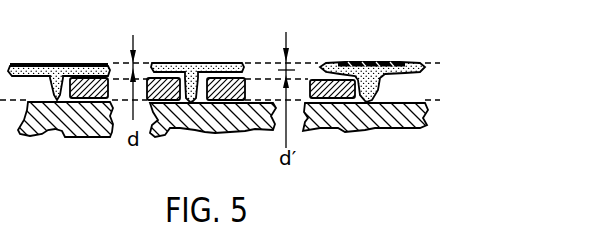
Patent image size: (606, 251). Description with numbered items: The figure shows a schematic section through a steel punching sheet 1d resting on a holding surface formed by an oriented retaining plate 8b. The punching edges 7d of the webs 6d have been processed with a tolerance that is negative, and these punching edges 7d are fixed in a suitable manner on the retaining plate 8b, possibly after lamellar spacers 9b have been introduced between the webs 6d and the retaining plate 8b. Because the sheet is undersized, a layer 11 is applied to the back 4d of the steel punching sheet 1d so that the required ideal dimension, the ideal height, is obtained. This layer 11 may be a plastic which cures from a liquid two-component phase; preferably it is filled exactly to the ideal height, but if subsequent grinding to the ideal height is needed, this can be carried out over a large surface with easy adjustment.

The layer 11 is at (67, 63).
The steel punching sheet 1d is at (268, 60).
The back of the steel punching sheet 4d is at (193, 58).
The web 6d is at (362, 104).
The punching edge 7d is at (364, 108).
The retaining plate 8b is at (85, 125).
The lamellar spacer 9b is at (213, 103).